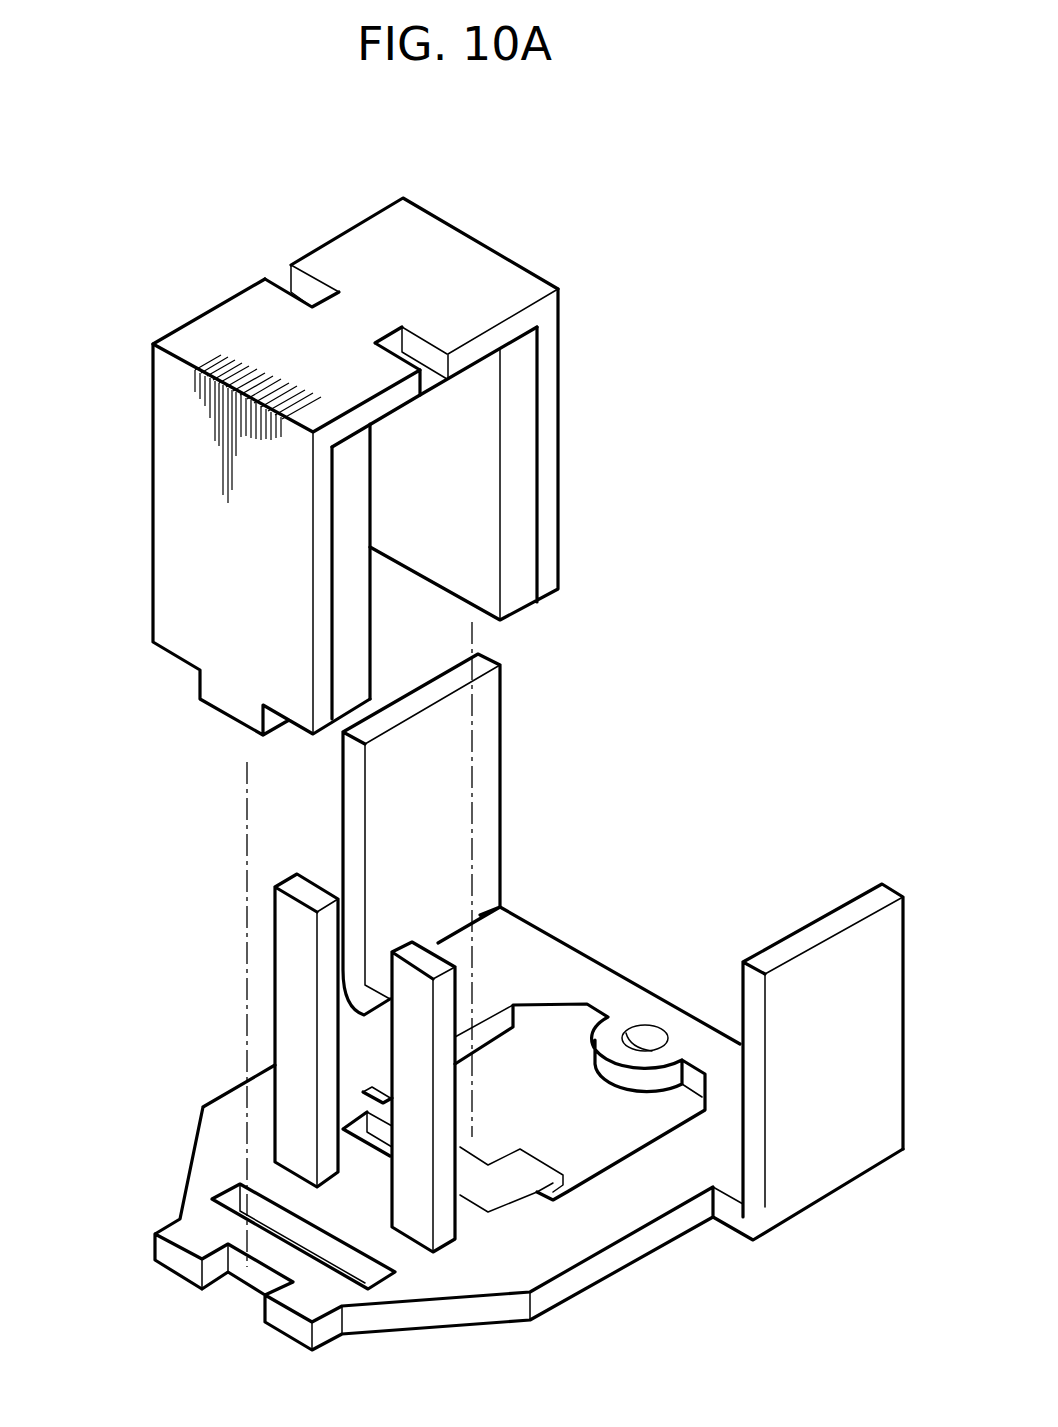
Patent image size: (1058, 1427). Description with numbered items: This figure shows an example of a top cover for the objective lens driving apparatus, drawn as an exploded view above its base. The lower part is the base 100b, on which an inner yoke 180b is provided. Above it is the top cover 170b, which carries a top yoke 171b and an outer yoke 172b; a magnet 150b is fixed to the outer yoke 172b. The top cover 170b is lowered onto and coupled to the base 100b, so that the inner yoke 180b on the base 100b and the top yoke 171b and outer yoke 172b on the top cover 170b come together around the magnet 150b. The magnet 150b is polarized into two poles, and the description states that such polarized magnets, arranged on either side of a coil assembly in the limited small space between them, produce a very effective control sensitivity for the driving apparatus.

The base 100b is at (509, 991).
The magnet 150b is at (350, 648).
The top cover 170b is at (380, 446).
The top yoke 171b is at (448, 257).
The outer yoke 172b is at (555, 510).
The inner yoke 180b is at (407, 1042).